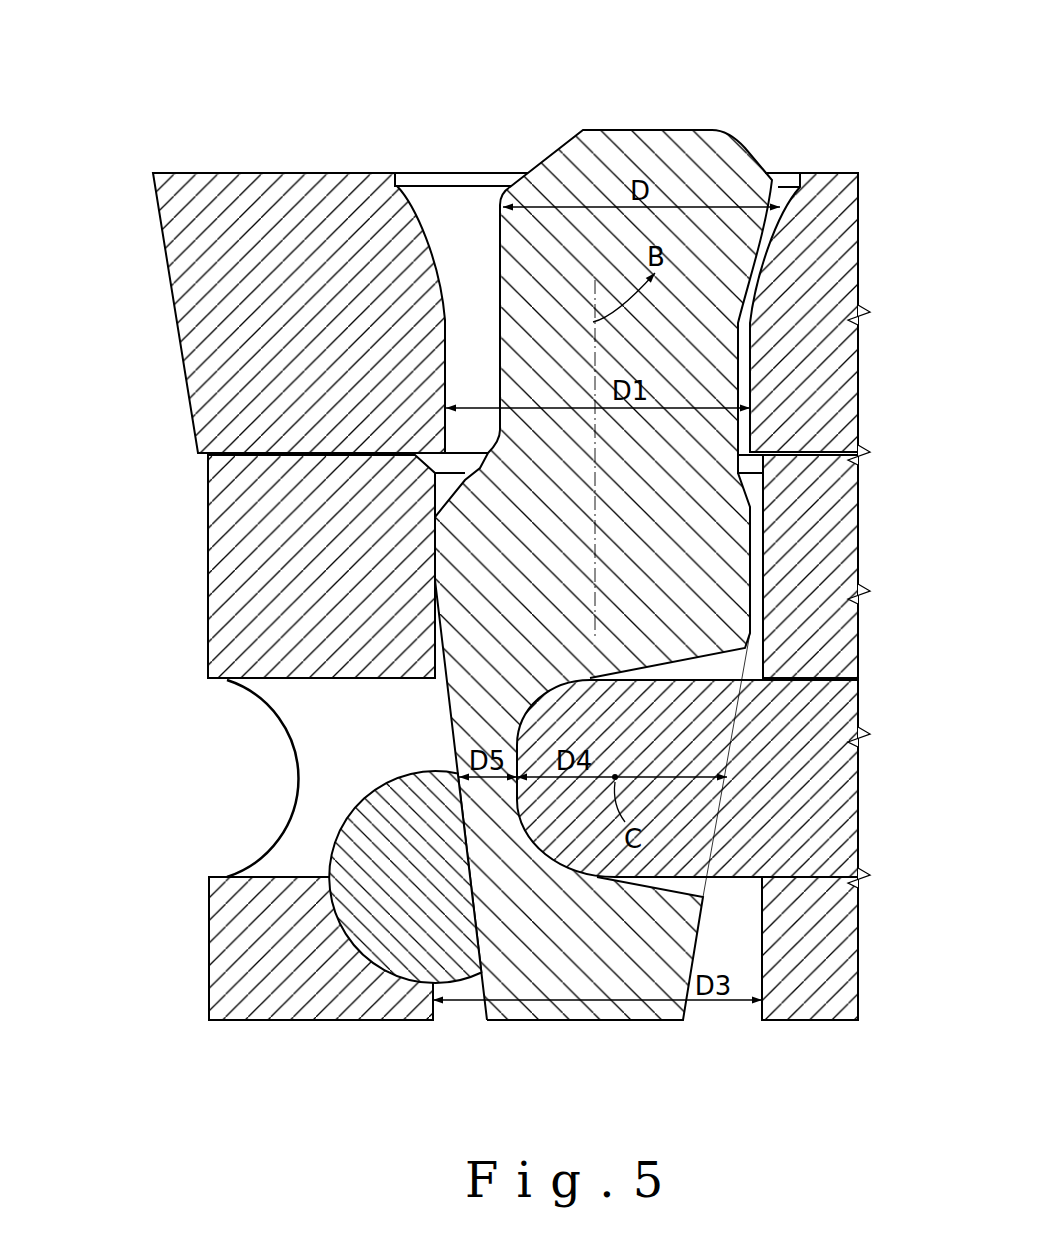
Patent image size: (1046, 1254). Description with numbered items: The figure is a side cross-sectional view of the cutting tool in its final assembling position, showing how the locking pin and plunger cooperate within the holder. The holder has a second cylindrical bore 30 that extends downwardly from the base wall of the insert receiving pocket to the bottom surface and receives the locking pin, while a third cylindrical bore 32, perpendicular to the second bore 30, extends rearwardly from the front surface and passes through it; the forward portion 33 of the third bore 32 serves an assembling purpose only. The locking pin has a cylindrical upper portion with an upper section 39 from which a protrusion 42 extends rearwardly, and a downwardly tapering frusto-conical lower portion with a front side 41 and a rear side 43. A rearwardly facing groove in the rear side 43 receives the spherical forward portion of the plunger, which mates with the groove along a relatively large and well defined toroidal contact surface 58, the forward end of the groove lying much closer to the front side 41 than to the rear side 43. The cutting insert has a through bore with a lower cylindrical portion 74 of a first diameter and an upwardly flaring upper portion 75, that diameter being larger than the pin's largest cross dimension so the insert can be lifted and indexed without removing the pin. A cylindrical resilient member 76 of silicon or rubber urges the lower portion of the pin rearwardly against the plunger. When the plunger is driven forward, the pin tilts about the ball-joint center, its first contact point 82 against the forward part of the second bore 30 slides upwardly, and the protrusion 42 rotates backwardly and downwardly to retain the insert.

The second cylindrical bore 30 is at (442, 1022).
The third cylindrical bore 32 is at (222, 783).
The forward portion of the third bore 33 is at (287, 852).
The upper section of the upper portion 39 is at (568, 163).
The front side of the lower portion 41 is at (445, 630).
The protrusion 42 is at (765, 198).
The rear side of the lower portion 43 is at (757, 633).
The toroidal contact surface 58 is at (583, 877).
The lower cylindrical portion 74 is at (450, 363).
The upwardly flaring upper portion 75 is at (420, 225).
The resilient member 76 is at (400, 830).
The first contact point 82 is at (433, 540).